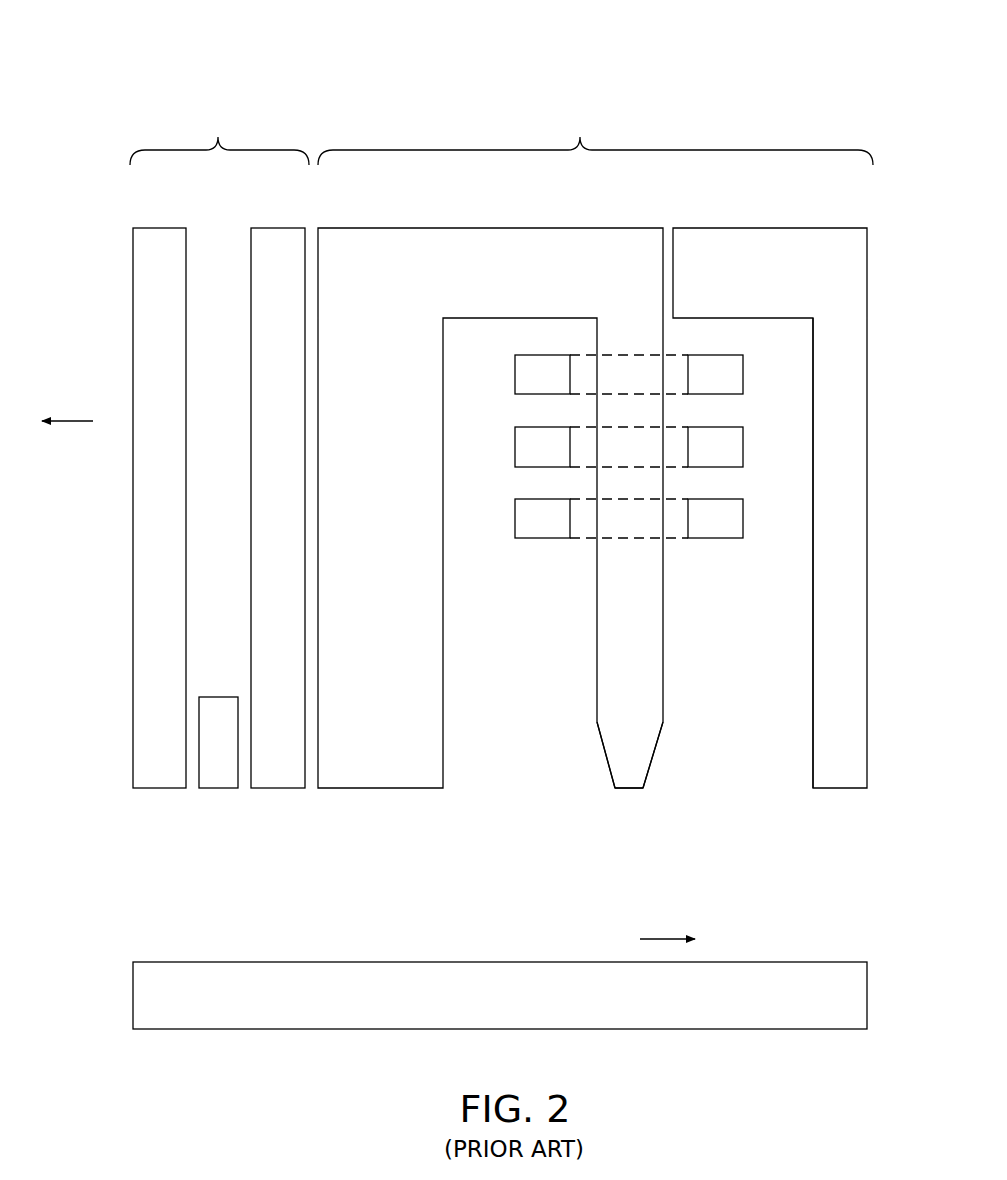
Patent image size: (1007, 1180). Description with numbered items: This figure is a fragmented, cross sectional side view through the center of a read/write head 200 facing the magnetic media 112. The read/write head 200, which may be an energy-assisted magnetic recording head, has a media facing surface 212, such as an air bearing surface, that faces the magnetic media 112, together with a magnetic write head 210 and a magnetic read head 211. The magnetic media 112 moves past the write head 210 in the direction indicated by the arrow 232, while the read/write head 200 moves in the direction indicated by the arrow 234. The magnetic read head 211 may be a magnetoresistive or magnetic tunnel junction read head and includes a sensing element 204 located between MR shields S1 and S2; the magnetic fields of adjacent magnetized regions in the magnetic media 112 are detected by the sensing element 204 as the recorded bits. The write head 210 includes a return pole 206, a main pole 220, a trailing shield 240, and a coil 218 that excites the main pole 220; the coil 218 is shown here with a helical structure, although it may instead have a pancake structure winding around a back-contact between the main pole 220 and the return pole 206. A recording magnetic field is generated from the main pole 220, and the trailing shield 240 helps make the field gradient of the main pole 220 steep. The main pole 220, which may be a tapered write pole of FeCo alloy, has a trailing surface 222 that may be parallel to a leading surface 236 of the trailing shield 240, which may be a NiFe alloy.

The read/write head 200 is at (130, 56).
The magnetic read head 211 is at (219, 138).
The magnetic write head 210 is at (595, 138).
The arrow 234 is at (74, 421).
The MR shield S1 is at (155, 789).
The MR sensing element 204 is at (218, 789).
The MR shield S2 is at (282, 789).
The return pole 206 is at (380, 789).
The coil 218 is at (543, 539).
The main pole 220 is at (607, 748).
The trailing surface 222 is at (665, 705).
The media facing surface 212 is at (628, 790).
The leading surface 236 is at (812, 620).
The trailing shield 240 is at (868, 750).
The arrow 232 is at (656, 939).
The magnetic media 112 is at (868, 995).